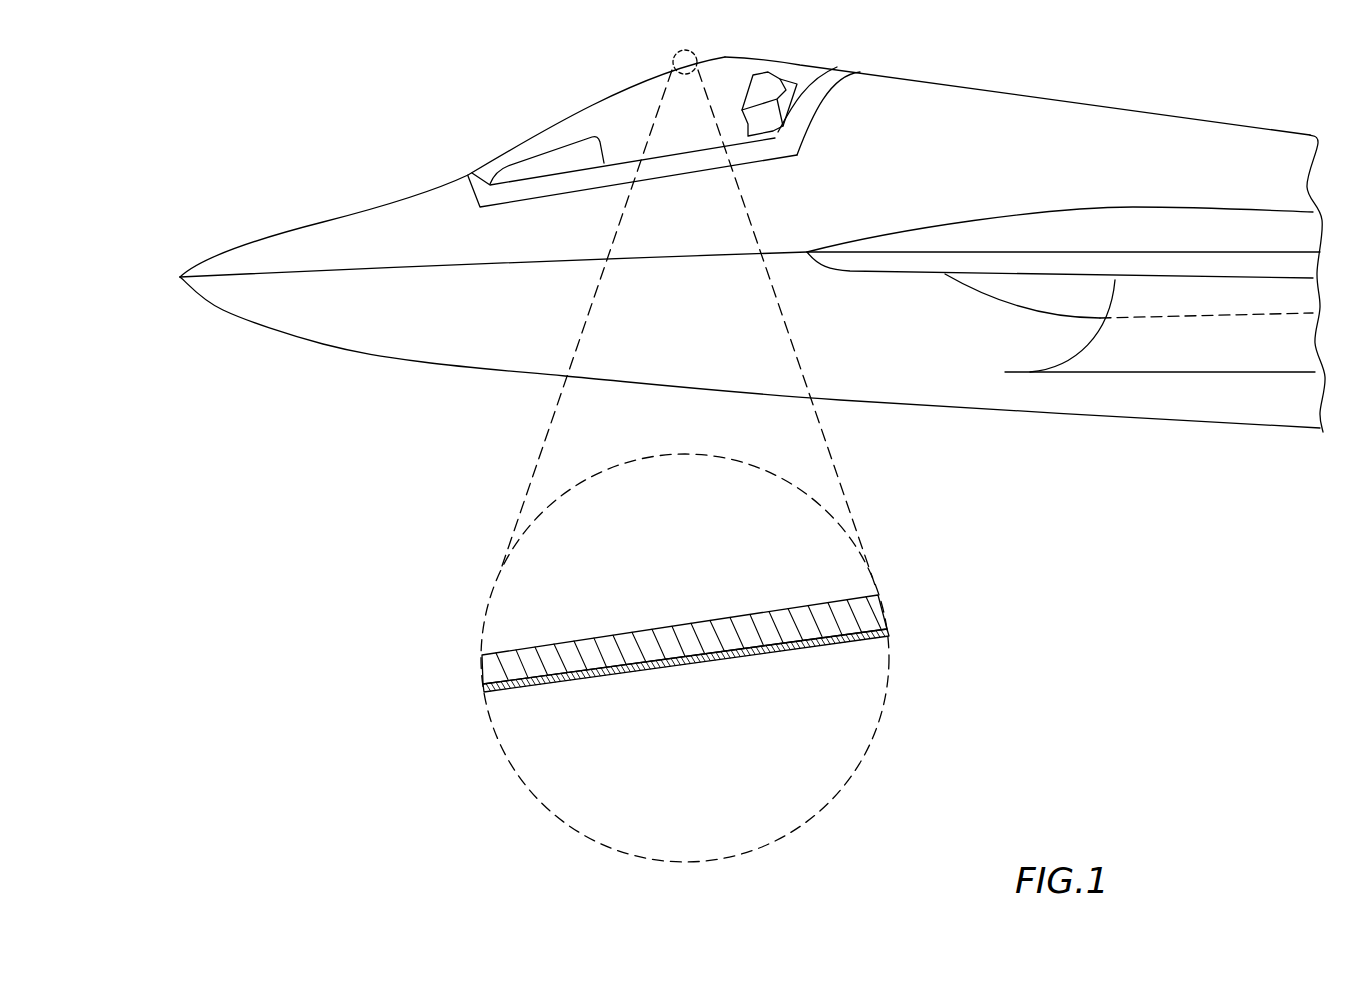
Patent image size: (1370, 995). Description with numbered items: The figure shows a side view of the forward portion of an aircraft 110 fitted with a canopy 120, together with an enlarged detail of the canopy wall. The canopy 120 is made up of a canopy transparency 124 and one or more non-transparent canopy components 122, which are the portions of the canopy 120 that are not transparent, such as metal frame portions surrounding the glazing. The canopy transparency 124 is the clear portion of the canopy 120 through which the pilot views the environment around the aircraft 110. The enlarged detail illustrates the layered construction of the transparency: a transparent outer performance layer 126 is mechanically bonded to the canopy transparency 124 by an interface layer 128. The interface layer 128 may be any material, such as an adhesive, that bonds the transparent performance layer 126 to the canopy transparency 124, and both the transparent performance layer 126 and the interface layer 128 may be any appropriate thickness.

The aircraft 110 is at (223, 232).
The canopy 120 is at (560, 118).
The non-transparent canopy components 122 is at (467, 188).
The canopy transparency 124 is at (633, 92).
The transparent outer performance layer 126 is at (493, 673).
The interface layer 128 is at (483, 693).